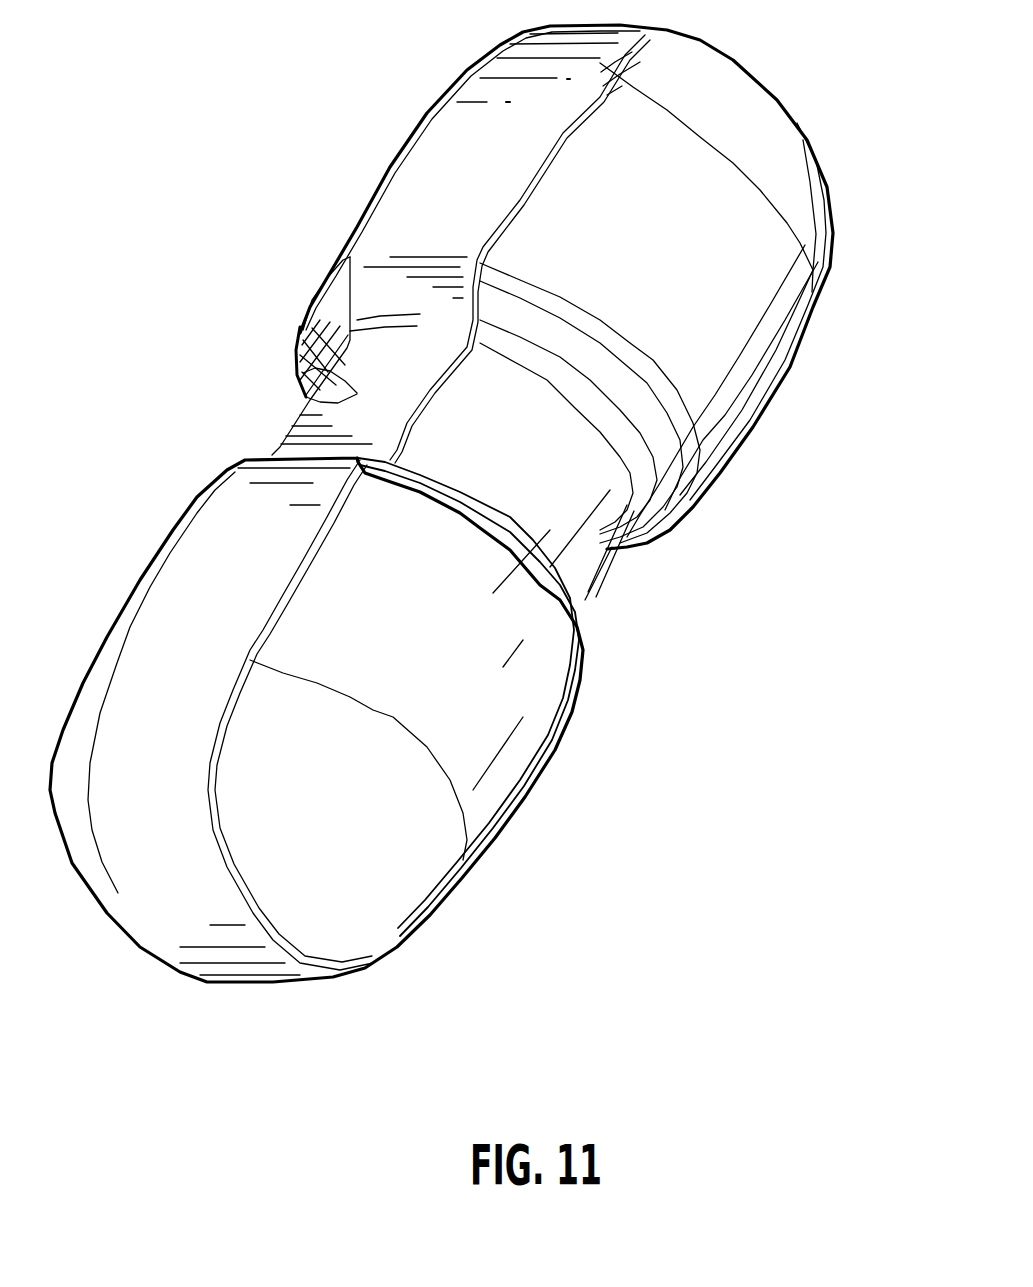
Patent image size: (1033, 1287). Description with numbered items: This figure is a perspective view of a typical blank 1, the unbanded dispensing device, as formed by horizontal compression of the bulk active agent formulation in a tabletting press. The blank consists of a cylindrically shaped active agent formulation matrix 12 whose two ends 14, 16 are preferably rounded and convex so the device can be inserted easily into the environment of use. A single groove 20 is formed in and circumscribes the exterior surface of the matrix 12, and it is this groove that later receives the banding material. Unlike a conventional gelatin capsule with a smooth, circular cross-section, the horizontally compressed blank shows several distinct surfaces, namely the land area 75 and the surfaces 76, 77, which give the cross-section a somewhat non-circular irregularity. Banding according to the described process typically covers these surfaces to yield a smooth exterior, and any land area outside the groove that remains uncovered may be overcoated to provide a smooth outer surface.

The blank 1 is at (300, 158).
The active agent formulation matrix 12 is at (523, 720).
The end of the matrix 14 is at (393, 893).
The end of the matrix 16 is at (785, 143).
The groove 20 is at (620, 617).
The land area 75 is at (358, 710).
The surface 76 is at (303, 373).
The surface 77 is at (567, 528).